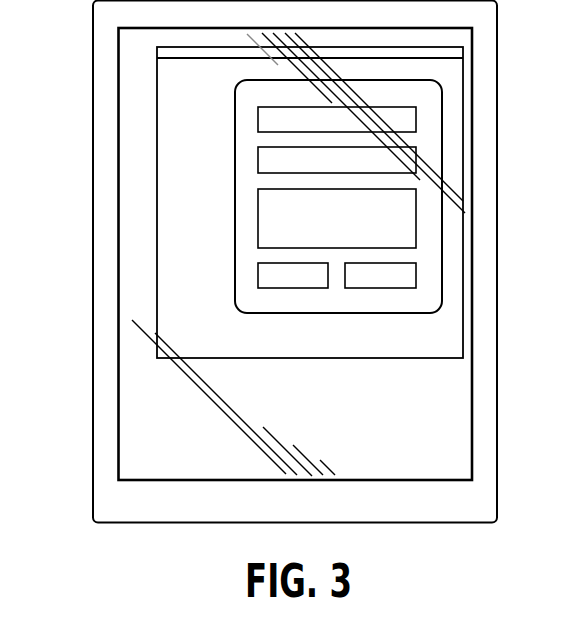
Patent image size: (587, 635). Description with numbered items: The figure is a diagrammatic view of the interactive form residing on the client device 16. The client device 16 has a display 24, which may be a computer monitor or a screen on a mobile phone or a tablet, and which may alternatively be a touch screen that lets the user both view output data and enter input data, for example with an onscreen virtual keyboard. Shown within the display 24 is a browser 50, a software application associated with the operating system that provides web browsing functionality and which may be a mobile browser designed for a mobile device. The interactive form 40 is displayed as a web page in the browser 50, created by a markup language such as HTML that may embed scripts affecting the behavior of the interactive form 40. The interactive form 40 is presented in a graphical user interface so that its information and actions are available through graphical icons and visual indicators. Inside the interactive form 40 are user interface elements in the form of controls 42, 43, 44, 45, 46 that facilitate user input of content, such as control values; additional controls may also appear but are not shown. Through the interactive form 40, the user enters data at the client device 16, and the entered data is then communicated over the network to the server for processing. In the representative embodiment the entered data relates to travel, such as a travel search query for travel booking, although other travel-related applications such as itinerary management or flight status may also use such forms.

The client device 16 is at (93, 75).
The display 24 is at (118, 258).
The browser 50 is at (322, 358).
The interactive form 40 is at (235, 260).
The control 42 is at (258, 114).
The control 43 is at (258, 158).
The control 44 is at (258, 213).
The control 45 is at (292, 288).
The control 46 is at (378, 288).